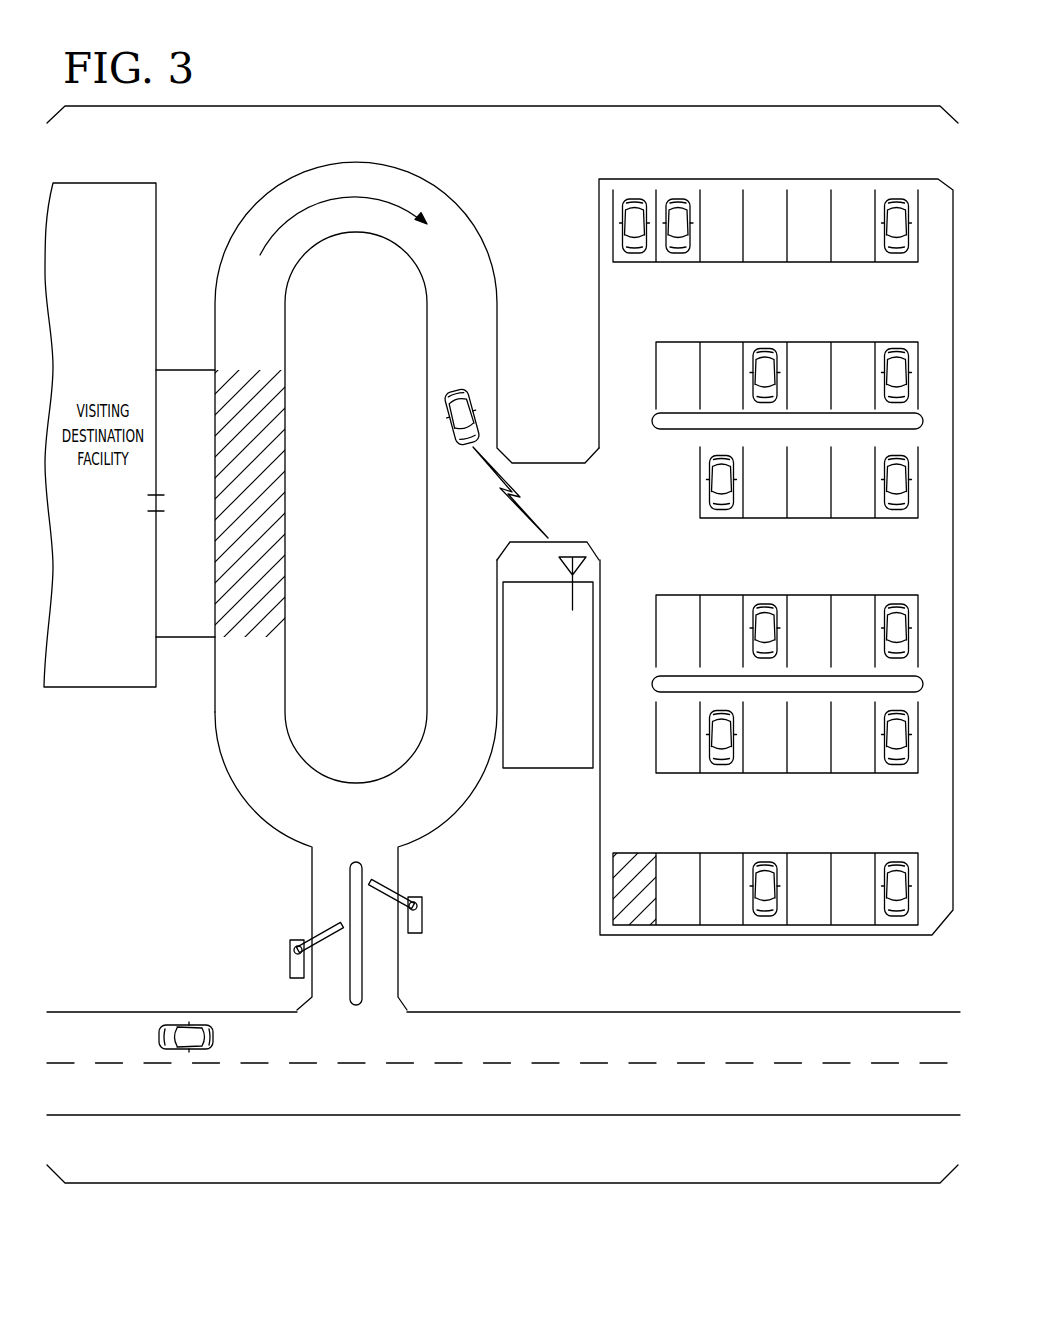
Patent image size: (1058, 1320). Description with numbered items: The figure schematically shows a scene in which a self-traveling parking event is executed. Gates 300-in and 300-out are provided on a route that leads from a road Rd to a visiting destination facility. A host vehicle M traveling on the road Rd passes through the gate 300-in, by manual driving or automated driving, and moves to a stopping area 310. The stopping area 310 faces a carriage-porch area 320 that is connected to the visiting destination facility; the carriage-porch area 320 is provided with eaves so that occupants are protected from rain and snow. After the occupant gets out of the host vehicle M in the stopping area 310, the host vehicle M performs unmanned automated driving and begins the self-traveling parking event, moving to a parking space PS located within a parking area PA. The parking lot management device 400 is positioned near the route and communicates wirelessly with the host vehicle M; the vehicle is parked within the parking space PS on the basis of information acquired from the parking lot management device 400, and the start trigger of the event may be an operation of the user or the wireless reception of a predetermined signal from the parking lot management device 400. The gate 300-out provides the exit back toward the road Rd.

The carriage-porch area 320 is at (208, 469).
The stopping area 310 is at (272, 517).
The parking lot management device 400 is at (548, 768).
The gate 300-in is at (287, 927).
The gate 300-out is at (442, 907).
The host vehicle M is at (185, 1027).
The parking space PS is at (634, 860).
The parking area PA is at (795, 573).
The road Rd is at (400, 1052).